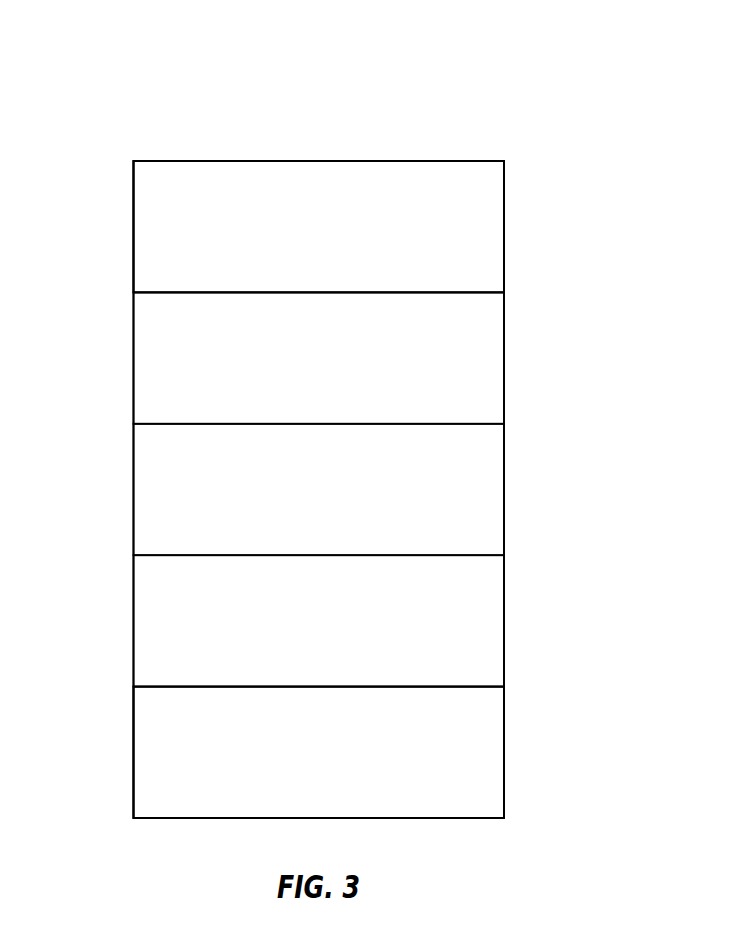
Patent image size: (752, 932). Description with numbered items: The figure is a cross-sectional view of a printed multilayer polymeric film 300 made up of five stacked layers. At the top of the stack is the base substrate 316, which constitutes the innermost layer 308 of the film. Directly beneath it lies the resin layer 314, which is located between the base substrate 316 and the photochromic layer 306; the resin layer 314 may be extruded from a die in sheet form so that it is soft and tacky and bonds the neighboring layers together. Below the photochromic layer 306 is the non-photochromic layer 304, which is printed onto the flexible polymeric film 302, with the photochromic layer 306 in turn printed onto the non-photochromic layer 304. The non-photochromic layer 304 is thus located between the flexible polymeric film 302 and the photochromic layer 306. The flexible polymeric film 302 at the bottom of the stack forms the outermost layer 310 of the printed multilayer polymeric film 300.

The printed multilayer polymeric film 300 is at (147, 121).
The flexible polymeric film 302 is at (504, 752).
The non-photochromic layer 304 is at (504, 620).
The photochromic layer 306 is at (504, 490).
The innermost layer 308 is at (504, 227).
The outermost layer 310 is at (504, 752).
The resin layer 314 is at (504, 357).
The base substrate 316 is at (504, 227).